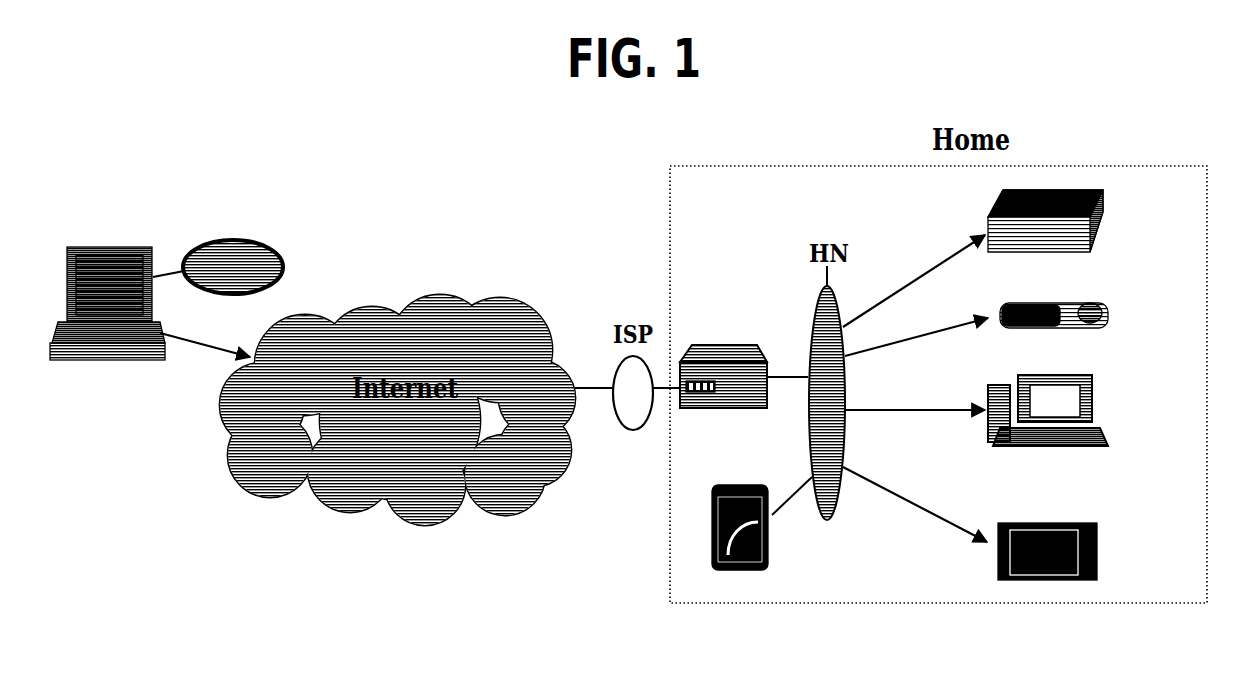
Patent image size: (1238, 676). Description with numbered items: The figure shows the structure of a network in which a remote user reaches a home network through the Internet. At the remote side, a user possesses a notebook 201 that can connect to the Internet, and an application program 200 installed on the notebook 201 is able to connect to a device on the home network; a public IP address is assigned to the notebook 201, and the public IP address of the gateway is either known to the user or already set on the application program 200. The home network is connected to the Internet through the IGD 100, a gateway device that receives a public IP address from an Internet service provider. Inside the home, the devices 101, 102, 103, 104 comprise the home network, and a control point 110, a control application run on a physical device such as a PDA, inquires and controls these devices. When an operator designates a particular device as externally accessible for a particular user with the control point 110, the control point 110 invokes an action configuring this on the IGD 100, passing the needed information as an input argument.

The notebook 201 is at (133, 247).
The application program 200 is at (236, 240).
The IGD 100 is at (729, 345).
The control point 110 is at (712, 524).
The device 101 is at (1103, 228).
The device 102 is at (1110, 316).
The device 103 is at (1107, 437).
The device 104 is at (1098, 553).